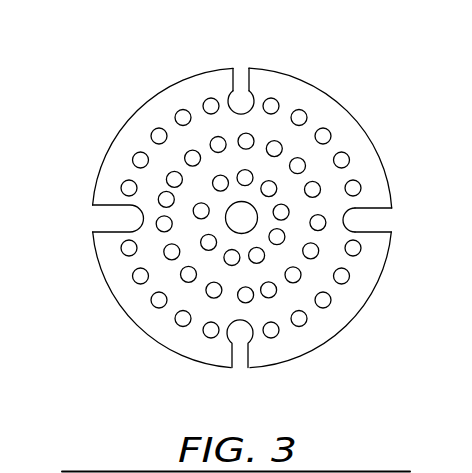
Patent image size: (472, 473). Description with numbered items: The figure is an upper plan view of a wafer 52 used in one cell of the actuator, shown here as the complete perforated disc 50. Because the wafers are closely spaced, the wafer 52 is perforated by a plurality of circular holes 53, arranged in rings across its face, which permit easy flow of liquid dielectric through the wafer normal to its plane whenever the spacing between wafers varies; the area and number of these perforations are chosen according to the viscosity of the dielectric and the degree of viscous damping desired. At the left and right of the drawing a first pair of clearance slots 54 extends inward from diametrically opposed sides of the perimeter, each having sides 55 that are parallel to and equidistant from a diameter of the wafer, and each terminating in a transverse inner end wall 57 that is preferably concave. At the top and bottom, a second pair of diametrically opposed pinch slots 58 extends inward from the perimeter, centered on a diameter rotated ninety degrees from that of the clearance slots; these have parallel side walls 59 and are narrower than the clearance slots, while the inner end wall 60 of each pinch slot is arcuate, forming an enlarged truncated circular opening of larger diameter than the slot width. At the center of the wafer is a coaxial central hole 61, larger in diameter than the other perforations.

The perforated plate 50 is at (254, 208).
The wafer 52 is at (269, 217).
The circular holes 53 is at (306, 116).
The clearance slots 54 is at (249, 218).
The sides 55 is at (388, 211).
The transverse inner end wall 57 is at (365, 235).
The pinch slots 58 is at (301, 208).
The side walls 59 is at (234, 70).
The inner end wall 60 is at (229, 98).
The central hole 61 is at (251, 225).